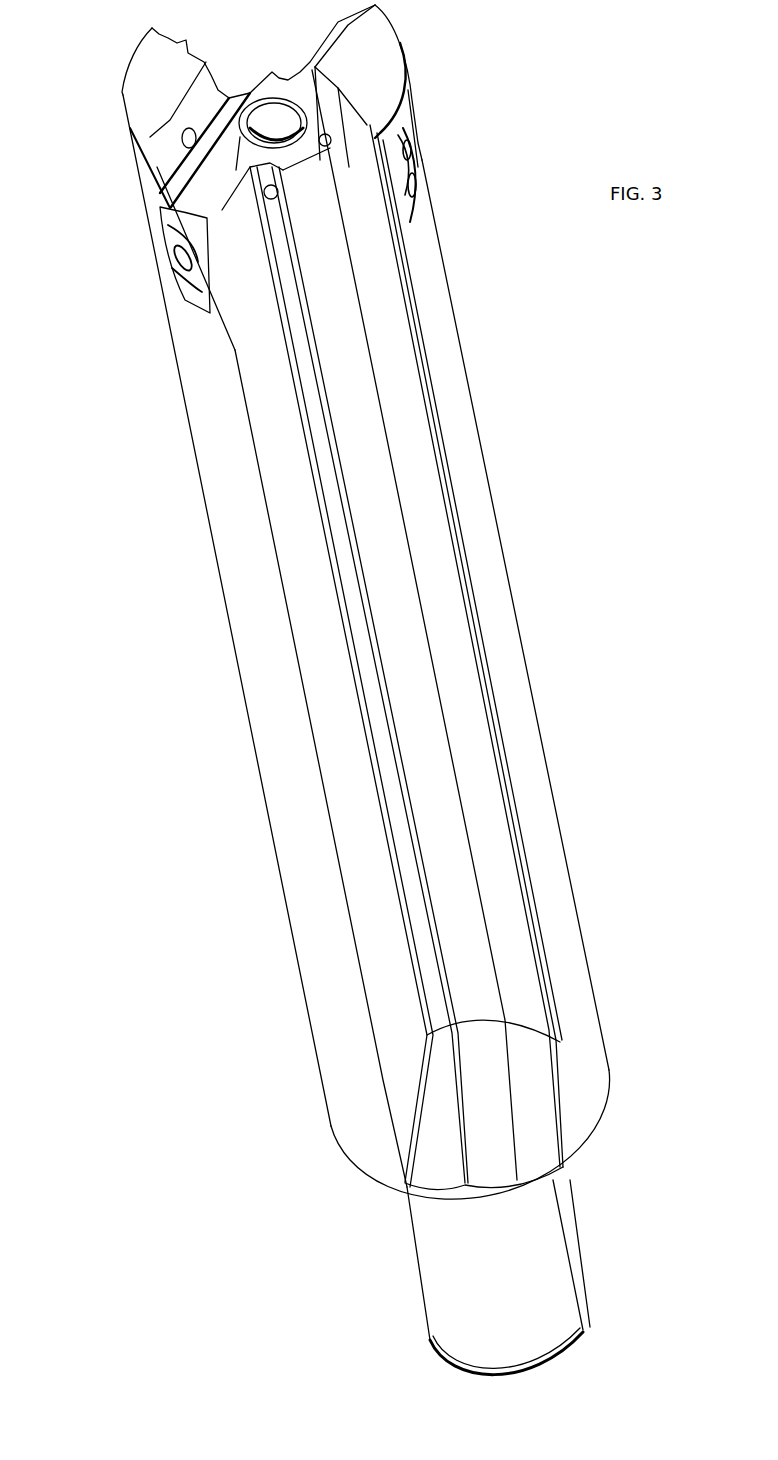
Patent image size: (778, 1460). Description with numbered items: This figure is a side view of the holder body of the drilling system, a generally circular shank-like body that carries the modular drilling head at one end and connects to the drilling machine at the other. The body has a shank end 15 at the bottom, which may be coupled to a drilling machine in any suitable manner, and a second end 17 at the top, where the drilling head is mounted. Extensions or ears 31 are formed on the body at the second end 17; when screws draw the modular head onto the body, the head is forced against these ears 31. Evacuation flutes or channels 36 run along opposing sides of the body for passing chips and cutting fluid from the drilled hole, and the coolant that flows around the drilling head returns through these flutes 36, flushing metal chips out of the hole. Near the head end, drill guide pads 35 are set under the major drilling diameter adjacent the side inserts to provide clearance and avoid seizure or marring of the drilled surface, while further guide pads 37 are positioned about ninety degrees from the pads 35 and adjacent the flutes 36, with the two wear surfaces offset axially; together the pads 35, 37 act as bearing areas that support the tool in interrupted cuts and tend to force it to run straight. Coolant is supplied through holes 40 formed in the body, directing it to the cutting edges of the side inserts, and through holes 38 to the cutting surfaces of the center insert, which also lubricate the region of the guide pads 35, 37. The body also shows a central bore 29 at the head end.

The second end 17 is at (269, 41).
The extensions or ears 31 is at (142, 82).
The central bore 29 is at (263, 117).
The drill guide pads 35 is at (172, 230).
The coolant holes 40 is at (268, 193).
The coolant holes 38 is at (327, 143).
The guide pads 37 is at (417, 190).
The evacuation flutes or channels 36 is at (428, 537).
The shank end 15 is at (580, 1235).